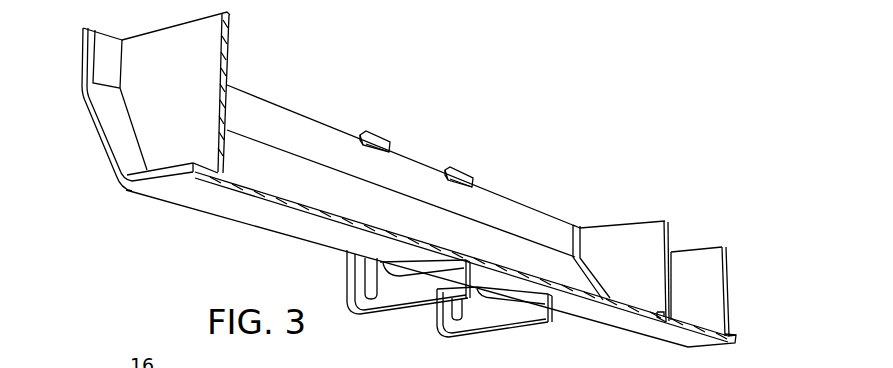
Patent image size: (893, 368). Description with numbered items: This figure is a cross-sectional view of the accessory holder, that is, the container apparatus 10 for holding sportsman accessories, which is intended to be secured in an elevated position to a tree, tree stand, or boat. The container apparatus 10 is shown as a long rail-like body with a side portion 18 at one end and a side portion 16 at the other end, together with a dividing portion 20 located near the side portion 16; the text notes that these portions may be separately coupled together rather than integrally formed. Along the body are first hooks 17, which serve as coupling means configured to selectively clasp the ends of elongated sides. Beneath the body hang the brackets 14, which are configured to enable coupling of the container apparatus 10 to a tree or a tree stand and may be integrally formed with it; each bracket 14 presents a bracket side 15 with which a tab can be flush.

The container apparatus 10 is at (648, 143).
The bracket 14 is at (425, 308).
The bracket side 15 is at (345, 287).
The side portion 16 is at (700, 266).
The first hook 17 is at (382, 134).
The side portion 18 is at (183, 92).
The dividing portion 20 is at (648, 237).